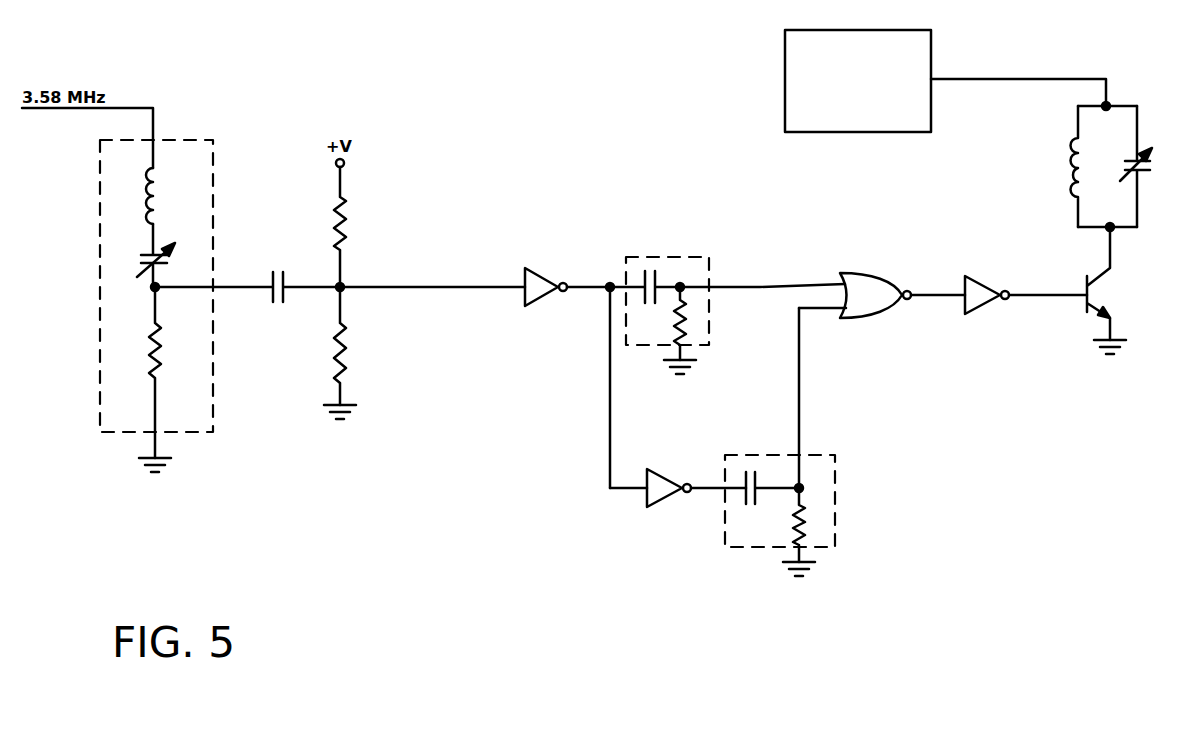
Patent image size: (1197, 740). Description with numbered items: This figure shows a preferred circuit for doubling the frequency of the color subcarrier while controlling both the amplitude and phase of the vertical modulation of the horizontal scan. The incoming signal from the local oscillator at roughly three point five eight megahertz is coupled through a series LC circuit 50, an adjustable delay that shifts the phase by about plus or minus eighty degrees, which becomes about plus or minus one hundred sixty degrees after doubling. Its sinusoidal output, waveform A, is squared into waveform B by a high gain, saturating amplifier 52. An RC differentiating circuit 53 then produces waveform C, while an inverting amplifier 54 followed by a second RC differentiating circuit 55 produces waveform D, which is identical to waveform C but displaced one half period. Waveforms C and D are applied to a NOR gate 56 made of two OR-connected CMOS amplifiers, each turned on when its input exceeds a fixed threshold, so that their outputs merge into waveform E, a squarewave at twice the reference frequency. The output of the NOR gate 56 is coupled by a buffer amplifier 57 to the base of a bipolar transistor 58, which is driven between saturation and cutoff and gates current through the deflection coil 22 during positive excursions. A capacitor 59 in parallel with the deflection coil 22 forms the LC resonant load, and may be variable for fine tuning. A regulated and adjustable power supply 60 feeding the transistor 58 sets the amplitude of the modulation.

The series LC circuit 50 is at (190, 148).
The saturating amplifier 52 is at (553, 299).
The RC differentiating circuit 53 is at (686, 258).
The inverting amplifier 54 is at (665, 500).
The RC differentiating circuit 55 is at (836, 490).
The NOR gate 56 is at (876, 319).
The buffer amplifier 57 is at (991, 315).
The bipolar transistor 58 is at (1098, 293).
The capacitor 59 is at (1140, 167).
The deflection coil 22 is at (1068, 172).
The regulated and adjustable power supply 60 is at (785, 50).
The waveform A is at (244, 276).
The waveform B is at (594, 276).
The waveform C is at (784, 276).
The waveform D is at (810, 432).
The waveform E is at (1031, 283).